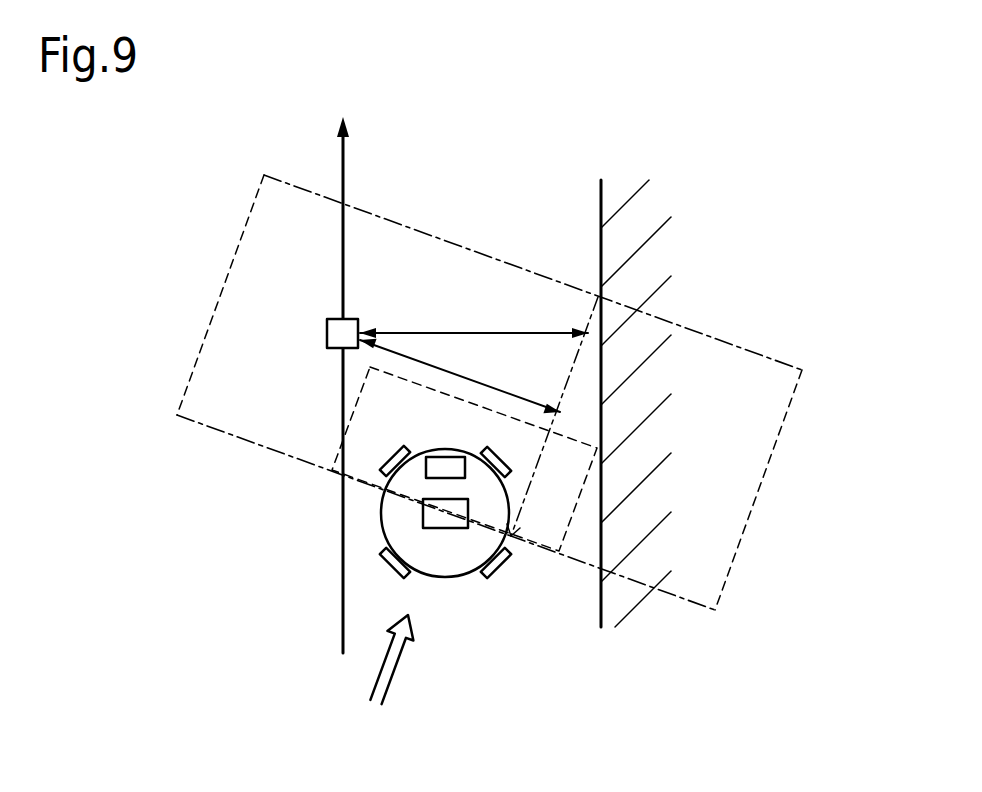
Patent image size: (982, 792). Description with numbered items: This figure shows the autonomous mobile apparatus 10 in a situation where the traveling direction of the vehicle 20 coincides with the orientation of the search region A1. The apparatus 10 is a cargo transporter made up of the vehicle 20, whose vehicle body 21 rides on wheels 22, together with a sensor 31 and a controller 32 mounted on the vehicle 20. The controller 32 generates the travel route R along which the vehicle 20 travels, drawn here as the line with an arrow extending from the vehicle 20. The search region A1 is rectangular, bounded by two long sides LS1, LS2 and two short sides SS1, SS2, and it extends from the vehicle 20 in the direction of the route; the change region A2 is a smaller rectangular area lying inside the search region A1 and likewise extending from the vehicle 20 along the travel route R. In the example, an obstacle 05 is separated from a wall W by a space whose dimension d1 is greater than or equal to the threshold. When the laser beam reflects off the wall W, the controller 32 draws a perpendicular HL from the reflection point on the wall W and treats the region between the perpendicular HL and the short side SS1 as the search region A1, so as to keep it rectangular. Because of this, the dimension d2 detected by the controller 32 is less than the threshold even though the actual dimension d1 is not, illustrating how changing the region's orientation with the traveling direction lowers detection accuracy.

The obstacle 05 is at (327, 333).
The autonomous mobile apparatus 10 is at (416, 515).
The vehicle 20 is at (468, 579).
The vehicle body 21 is at (447, 574).
The wheels 22 is at (390, 460).
The sensor 31 is at (440, 457).
The controller 32 is at (437, 528).
The travel route R is at (346, 179).
The wall W is at (600, 196).
The perpendicular HL is at (573, 372).
The long side LS1 is at (258, 445).
The long side LS2 is at (465, 248).
The short side SS1 is at (233, 258).
The short side SS2 is at (778, 438).
The search region A1 is at (197, 360).
The change region A2 is at (368, 372).
The dimension of space d1 is at (468, 333).
The detected dimension d2 is at (497, 388).